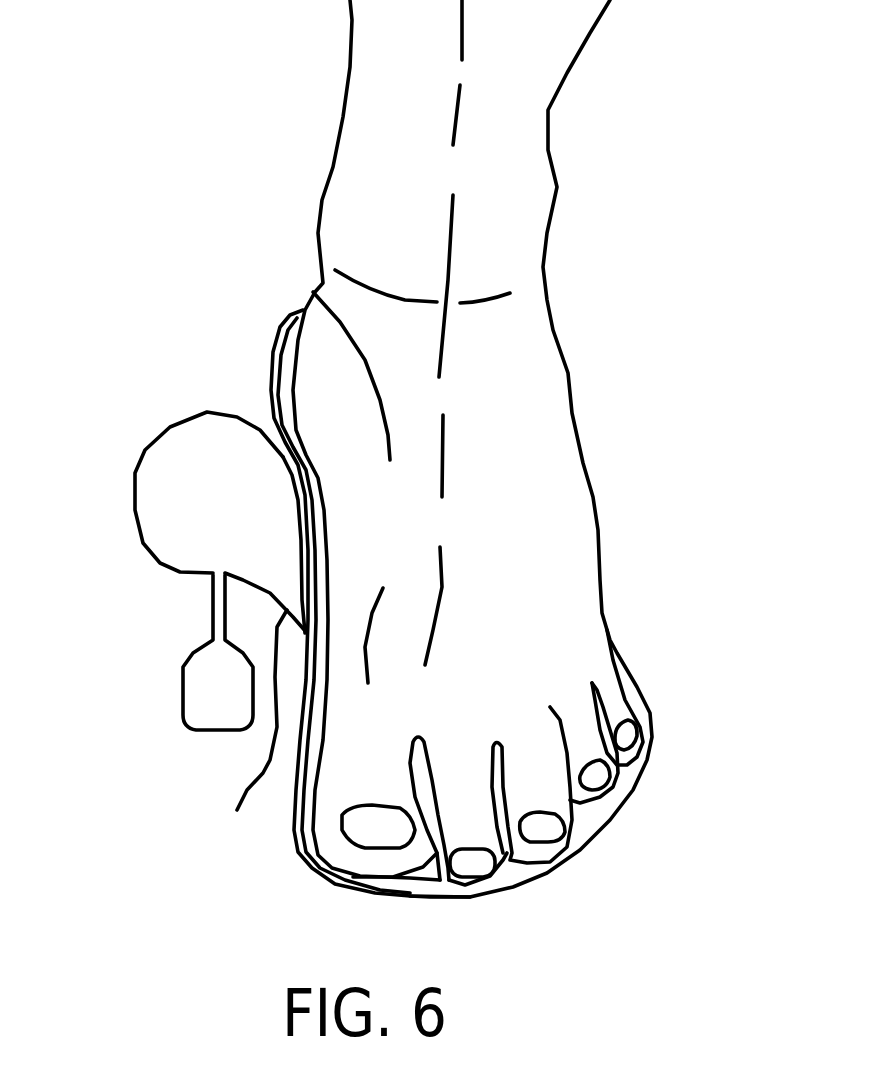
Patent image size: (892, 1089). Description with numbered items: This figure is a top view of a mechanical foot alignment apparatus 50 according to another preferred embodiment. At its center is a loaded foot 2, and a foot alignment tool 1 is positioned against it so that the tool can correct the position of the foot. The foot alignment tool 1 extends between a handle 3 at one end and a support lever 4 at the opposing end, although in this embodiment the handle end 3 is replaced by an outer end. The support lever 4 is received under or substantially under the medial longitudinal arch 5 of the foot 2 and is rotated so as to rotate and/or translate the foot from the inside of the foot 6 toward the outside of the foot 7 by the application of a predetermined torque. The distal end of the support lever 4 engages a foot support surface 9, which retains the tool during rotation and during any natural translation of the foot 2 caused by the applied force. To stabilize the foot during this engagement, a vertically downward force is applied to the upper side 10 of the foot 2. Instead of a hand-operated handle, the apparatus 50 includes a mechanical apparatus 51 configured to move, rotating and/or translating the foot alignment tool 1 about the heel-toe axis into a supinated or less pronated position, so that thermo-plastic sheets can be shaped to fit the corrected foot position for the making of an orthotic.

The foot alignment tool 1 is at (126, 469).
The foot 2 is at (494, 448).
The handle 3 is at (242, 420).
The support lever 4 is at (244, 732).
The medial longitudinal arch 5 is at (313, 292).
The inside of the foot 6 is at (366, 668).
The outside of the foot 7 is at (598, 510).
The foot support surface 9 is at (278, 337).
The upper side of the foot 10 is at (468, 493).
The mechanical foot alignment apparatus 50 is at (148, 699).
The mechanical apparatus 51 is at (210, 622).